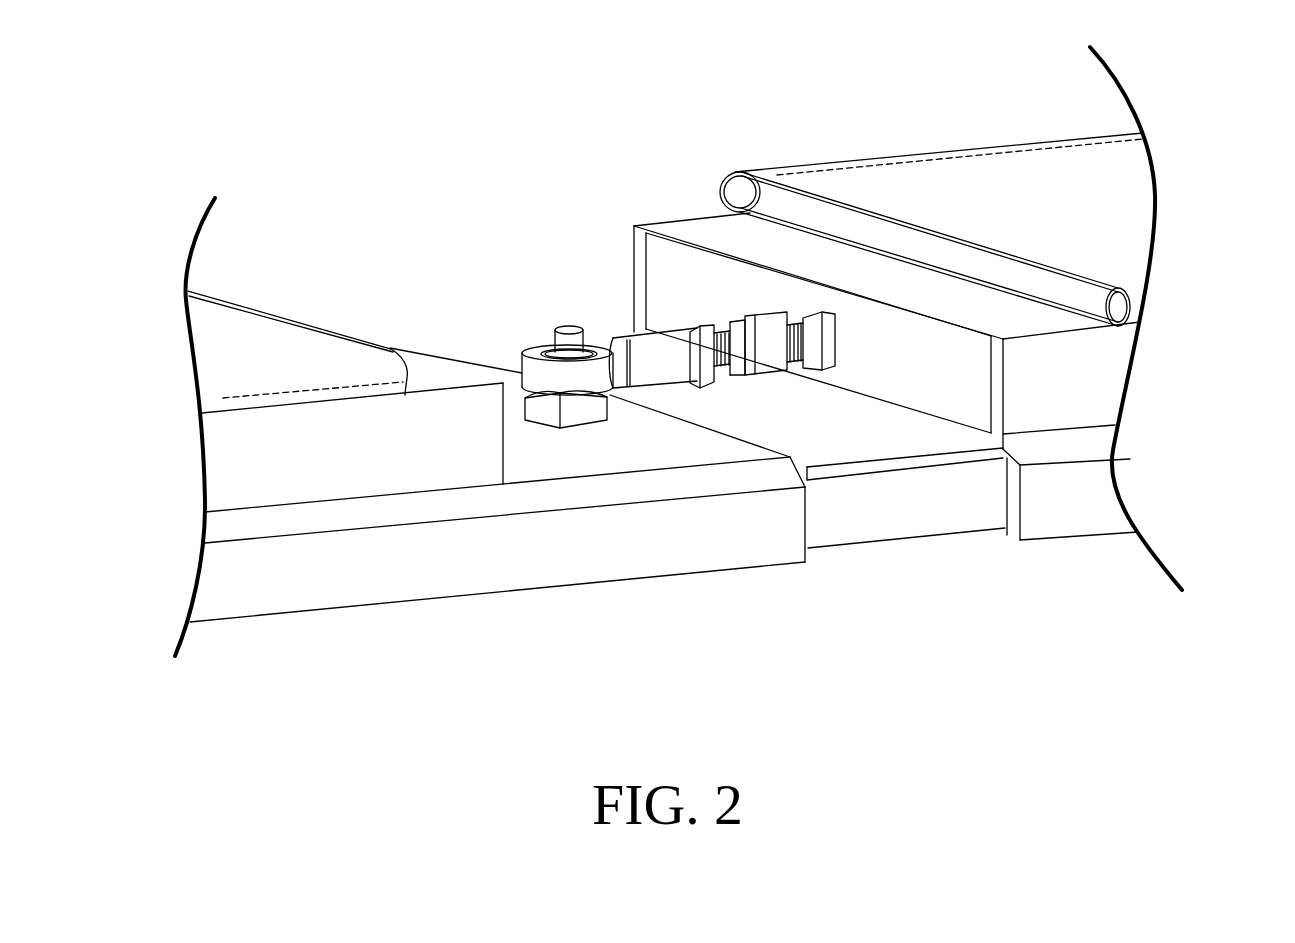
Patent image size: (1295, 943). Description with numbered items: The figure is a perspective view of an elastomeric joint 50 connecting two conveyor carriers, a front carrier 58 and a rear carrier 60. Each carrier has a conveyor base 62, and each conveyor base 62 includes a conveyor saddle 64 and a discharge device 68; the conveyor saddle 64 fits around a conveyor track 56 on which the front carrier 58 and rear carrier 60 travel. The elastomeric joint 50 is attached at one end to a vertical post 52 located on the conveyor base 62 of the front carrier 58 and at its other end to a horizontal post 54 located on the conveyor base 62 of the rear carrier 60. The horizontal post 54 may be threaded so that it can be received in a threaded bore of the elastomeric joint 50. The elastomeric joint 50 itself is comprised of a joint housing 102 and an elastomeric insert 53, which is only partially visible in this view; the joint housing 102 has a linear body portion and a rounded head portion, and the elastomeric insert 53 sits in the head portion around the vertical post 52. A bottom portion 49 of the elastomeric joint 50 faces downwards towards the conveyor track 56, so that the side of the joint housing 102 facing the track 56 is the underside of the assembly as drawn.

The bottom portion 49 is at (680, 396).
The elastomeric joint 50 is at (651, 327).
The vertical post 52 is at (560, 328).
The elastomeric insert 53 is at (543, 342).
The horizontal post 54 is at (722, 325).
The conveyor track 56 is at (897, 508).
The front carrier 58 is at (198, 665).
The rear carrier 60 is at (1185, 553).
The conveyor base 62 is at (432, 345).
The conveyor saddle 64 is at (685, 542).
The discharge device 68 is at (238, 335).
The joint housing 102 is at (628, 333).